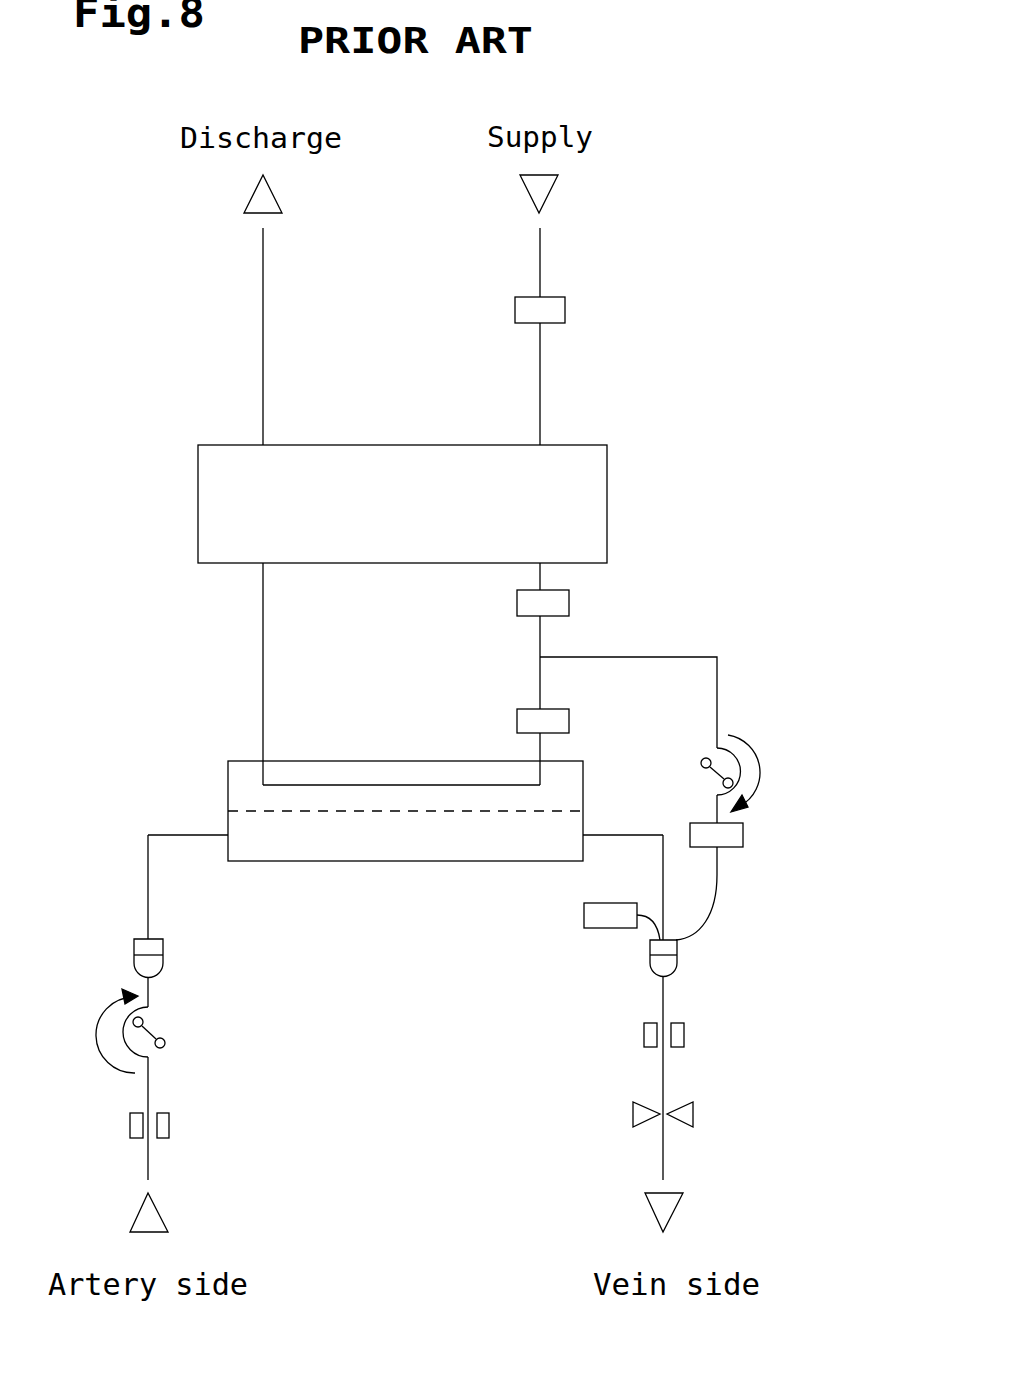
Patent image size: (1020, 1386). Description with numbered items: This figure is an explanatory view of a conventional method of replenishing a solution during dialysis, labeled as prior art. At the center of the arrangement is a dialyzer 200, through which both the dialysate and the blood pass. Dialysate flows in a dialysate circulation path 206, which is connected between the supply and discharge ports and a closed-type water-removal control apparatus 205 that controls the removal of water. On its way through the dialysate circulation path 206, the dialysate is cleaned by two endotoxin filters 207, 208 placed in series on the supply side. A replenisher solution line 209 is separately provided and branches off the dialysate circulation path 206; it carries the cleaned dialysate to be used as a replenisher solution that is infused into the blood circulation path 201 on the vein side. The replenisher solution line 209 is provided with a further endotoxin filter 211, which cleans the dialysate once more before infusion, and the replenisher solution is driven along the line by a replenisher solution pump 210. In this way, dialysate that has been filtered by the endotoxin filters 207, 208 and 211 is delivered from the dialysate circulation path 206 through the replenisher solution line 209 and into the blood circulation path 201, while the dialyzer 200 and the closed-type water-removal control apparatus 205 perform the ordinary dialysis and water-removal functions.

The dialyzer 200 is at (228, 772).
The blood circulation path 201 is at (663, 1007).
The closed-type water-removal control apparatus 205 is at (607, 502).
The dialysate circulation path 206 is at (263, 643).
The endotoxin filter 207 is at (565, 310).
The endotoxin filter 208 is at (569, 604).
The replenisher solution line 209 is at (696, 691).
The replenisher solution pump 210 is at (742, 763).
The endotoxin filter 211 is at (743, 838).